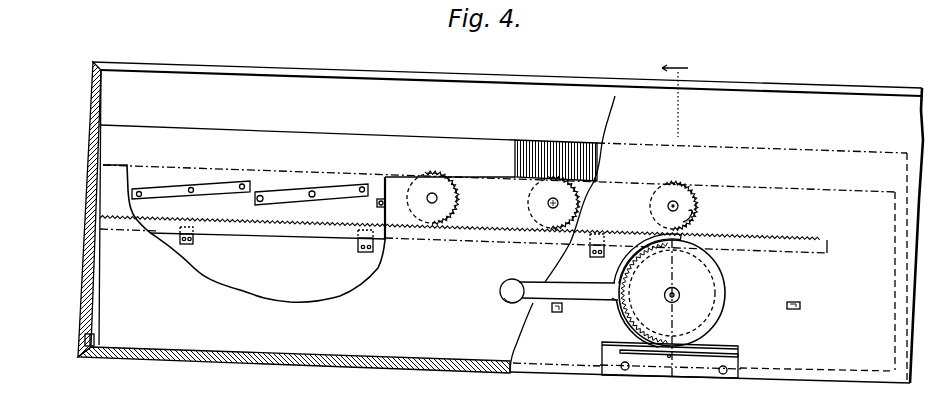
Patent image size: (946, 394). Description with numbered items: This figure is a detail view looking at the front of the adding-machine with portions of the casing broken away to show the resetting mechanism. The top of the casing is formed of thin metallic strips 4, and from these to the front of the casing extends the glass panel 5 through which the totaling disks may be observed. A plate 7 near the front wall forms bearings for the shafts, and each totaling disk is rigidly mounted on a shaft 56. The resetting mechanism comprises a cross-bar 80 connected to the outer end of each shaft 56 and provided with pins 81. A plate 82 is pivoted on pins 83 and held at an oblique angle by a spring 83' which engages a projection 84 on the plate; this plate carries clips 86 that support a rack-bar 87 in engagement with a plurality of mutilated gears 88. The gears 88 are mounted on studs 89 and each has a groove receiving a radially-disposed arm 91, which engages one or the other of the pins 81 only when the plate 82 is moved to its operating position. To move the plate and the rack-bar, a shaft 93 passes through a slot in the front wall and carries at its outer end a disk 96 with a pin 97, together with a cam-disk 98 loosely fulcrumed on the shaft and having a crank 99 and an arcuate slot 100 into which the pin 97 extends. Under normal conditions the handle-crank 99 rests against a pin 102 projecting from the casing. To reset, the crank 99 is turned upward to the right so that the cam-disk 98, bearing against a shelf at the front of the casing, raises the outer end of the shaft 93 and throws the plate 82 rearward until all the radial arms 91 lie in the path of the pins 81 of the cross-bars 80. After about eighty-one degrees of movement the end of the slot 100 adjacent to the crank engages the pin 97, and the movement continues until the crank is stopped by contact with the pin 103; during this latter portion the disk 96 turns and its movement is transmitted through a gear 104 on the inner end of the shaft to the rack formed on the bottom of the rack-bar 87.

The thin metallic strips 4 is at (294, 370).
The glass panel 5 is at (675, 91).
The plate 7 is at (702, 100).
The shaft 56 is at (314, 191).
The cross-bar 80 is at (160, 190).
The pins 81 is at (259, 195).
The plate 82 is at (244, 243).
The pins 83 is at (66, 335).
The spring 83' is at (702, 355).
The projection 84 is at (668, 369).
The clips 86 is at (358, 243).
The rack-bar 87 is at (195, 240).
The mutilated gears 88 is at (428, 176).
The studs 89 is at (437, 202).
The radially-disposed arm 91 is at (469, 207).
The shaft 93 is at (680, 296).
The disk 96 is at (621, 278).
The pin 97 is at (619, 303).
The cam-disk 98 is at (580, 300).
The crank 99 is at (517, 301).
The arcuate slot 100 is at (622, 284).
The pin 102 is at (553, 313).
The pin 103 is at (801, 306).
The gear 104 is at (620, 323).